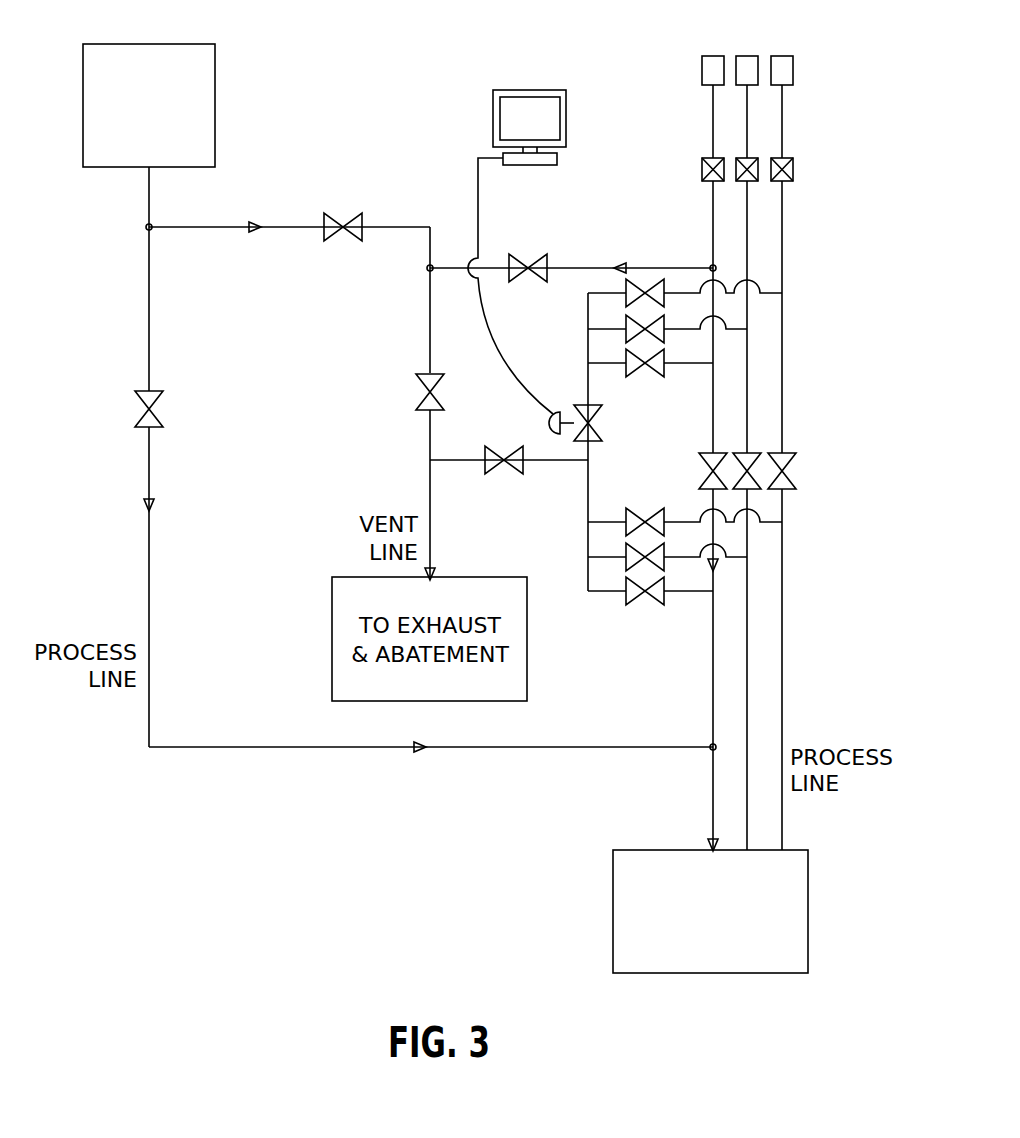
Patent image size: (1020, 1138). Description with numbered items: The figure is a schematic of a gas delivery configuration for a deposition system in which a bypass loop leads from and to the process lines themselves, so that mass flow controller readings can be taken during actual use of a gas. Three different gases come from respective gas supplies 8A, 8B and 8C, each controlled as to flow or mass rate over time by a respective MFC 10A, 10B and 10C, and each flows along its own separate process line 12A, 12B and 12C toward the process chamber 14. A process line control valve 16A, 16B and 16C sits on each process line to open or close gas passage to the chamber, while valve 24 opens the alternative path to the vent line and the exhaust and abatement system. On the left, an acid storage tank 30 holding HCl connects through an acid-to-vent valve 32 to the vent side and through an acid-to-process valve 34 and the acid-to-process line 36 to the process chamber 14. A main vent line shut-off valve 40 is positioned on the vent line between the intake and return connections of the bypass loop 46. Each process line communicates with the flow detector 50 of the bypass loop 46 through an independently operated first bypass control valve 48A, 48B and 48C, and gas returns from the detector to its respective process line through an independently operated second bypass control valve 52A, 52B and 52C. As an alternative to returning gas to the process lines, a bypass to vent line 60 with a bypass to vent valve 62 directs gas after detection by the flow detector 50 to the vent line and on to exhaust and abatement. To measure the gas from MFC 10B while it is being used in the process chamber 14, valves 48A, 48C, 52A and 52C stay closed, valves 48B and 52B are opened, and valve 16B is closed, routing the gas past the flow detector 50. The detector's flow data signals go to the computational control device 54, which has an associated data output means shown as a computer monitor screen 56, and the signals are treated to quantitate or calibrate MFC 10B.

The gas supply 8A is at (702, 73).
The gas supply 8B is at (747, 56).
The gas supply 8C is at (793, 71).
The MFC 10A is at (702, 170).
The MFC 10B is at (751, 158).
The MFC 10C is at (793, 169).
The process line 12A is at (713, 622).
The process line 12B is at (747, 657).
The process line 12C is at (782, 695).
The process chamber 14 is at (613, 910).
The process line control valve 16A is at (718, 453).
The process line control valve 16B is at (752, 453).
The process line control valve 16C is at (791, 478).
The valve 24 is at (524, 254).
The acid storage tank 30 is at (83, 106).
The acid-to-vent valve 32 is at (340, 213).
The acid-to-process valve 34 is at (135, 409).
The acid-to-process line 36 is at (333, 748).
The main vent line shut-off valve 40 is at (417, 392).
The bypass loop 46 is at (588, 356).
The first bypass control valve 48A is at (650, 378).
The first bypass control valve 48B is at (626, 319).
The first bypass control valve 48C is at (641, 280).
The flow detector 50 is at (601, 431).
The second bypass control valve 52A is at (650, 606).
The second bypass control valve 52B is at (626, 547).
The second bypass control valve 52C is at (641, 508).
The computational control device 54 is at (557, 159).
The computer monitor screen 56 is at (527, 90).
The bypass to vent line 60 is at (461, 461).
The bypass to vent valve 62 is at (503, 446).